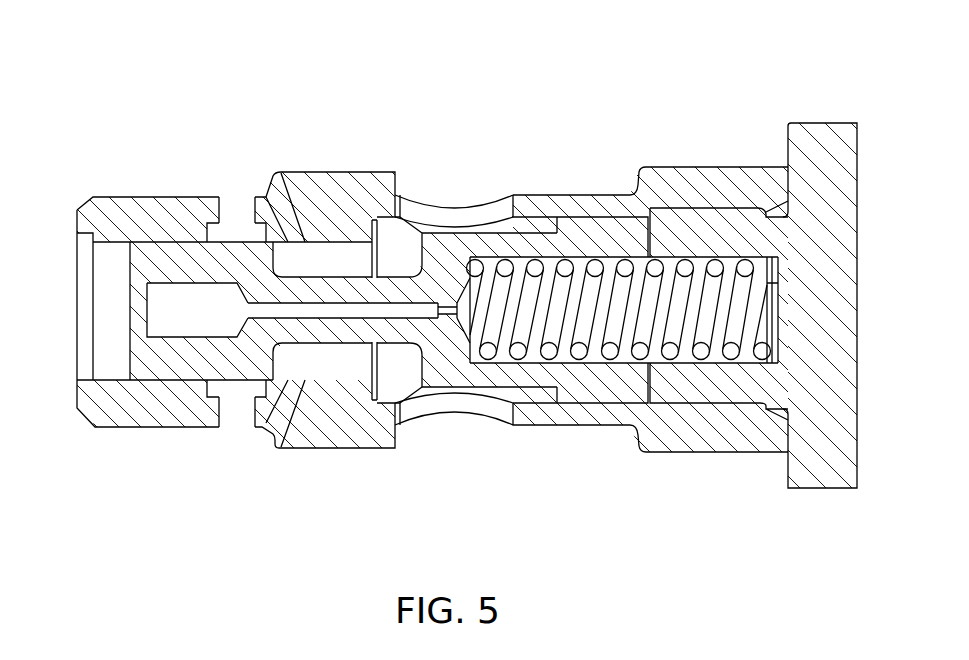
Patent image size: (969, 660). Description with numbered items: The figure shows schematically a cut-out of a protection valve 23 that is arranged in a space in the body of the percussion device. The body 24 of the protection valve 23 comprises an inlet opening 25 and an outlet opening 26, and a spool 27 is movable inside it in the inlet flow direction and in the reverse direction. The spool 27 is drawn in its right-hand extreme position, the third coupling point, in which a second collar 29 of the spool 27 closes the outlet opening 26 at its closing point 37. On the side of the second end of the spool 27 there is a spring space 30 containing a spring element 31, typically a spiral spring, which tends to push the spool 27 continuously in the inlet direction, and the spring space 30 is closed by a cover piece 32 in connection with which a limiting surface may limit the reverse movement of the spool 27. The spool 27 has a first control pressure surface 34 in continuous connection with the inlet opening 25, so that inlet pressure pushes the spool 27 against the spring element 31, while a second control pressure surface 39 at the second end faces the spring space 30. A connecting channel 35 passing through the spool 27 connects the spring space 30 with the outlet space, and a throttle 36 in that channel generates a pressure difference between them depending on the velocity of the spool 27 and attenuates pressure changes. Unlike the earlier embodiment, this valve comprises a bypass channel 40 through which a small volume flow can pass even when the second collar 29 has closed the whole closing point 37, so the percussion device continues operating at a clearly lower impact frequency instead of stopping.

The protection valve 23 is at (277, 64).
The body 24 is at (125, 213).
The inlet opening 25 is at (450, 205).
The outlet opening 26 is at (223, 212).
The spool 27 is at (153, 368).
The second collar 29 is at (273, 258).
The spring space 30 is at (717, 353).
The spring element 31 is at (577, 363).
The cover piece 32 is at (795, 148).
The first control pressure surface 34 is at (557, 393).
The connecting channel 35 is at (343, 313).
The throttle 36 is at (447, 315).
The closing point 37 is at (252, 228).
The second control pressure surface 39 is at (650, 383).
The bypass channel 40 is at (282, 217).